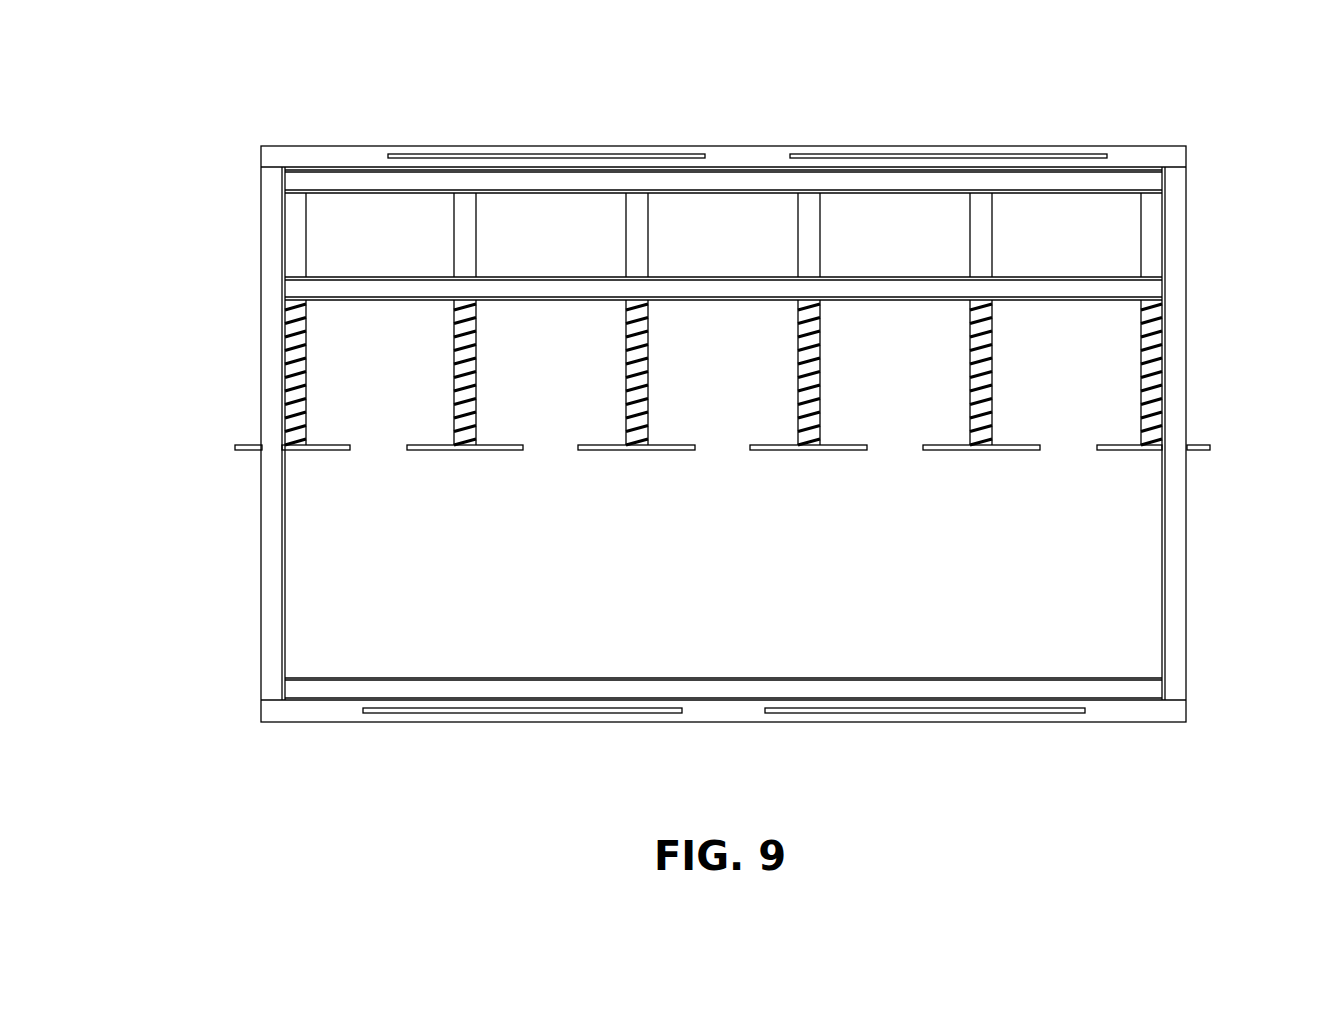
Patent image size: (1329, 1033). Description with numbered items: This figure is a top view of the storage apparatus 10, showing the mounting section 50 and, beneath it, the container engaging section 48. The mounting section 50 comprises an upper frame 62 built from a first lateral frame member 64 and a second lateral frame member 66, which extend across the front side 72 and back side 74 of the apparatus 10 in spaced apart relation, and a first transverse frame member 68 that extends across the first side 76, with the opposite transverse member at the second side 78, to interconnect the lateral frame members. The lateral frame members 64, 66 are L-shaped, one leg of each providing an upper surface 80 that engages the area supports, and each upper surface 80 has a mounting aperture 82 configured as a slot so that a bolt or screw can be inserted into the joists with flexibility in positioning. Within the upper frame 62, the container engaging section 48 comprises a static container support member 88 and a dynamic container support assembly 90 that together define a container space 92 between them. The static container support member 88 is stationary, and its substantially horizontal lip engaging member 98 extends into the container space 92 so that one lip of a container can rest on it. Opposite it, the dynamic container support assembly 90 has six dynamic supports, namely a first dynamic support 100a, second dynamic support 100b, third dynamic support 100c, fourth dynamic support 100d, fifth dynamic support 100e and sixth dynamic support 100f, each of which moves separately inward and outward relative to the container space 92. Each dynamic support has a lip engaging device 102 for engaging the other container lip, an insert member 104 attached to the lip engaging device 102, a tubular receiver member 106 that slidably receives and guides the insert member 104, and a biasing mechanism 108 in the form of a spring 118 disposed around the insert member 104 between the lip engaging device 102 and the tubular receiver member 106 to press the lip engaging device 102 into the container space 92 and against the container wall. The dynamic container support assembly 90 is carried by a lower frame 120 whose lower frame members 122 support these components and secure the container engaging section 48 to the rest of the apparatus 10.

The apparatus 10 is at (1192, 110).
The container engaging section 48 is at (1212, 264).
The mounting section 50 is at (1198, 689).
The upper frame 62 is at (272, 581).
The first lateral frame member 64 is at (306, 712).
The second lateral frame member 66 is at (333, 158).
The first transverse frame member 68 is at (270, 516).
The front side 72 is at (553, 744).
The back side 74 is at (853, 126).
The first side 76 is at (226, 411).
The second side 78 is at (1207, 352).
The upper surface 80 is at (745, 157).
The mounting aperture 82 is at (446, 155).
The static container support member 88 is at (466, 679).
The dynamic container support assembly 90 is at (275, 241).
The container space 92 is at (1113, 602).
The lip engaging member 98 is at (828, 689).
The first dynamic support 100a is at (318, 459).
The second dynamic support 100b is at (466, 459).
The third dynamic support 100c is at (637, 457).
The fourth dynamic support 100d is at (817, 459).
The fifth dynamic support 100e is at (978, 459).
The sixth dynamic support 100f is at (1148, 459).
The lip engaging device 102 is at (498, 446).
The insert member 104 is at (812, 365).
The tubular receiver member 106 is at (985, 232).
The biasing mechanism 108 is at (1007, 388).
The spring 118 is at (648, 381).
The lower frame 120 is at (404, 301).
The lower frame member 122 is at (348, 180).